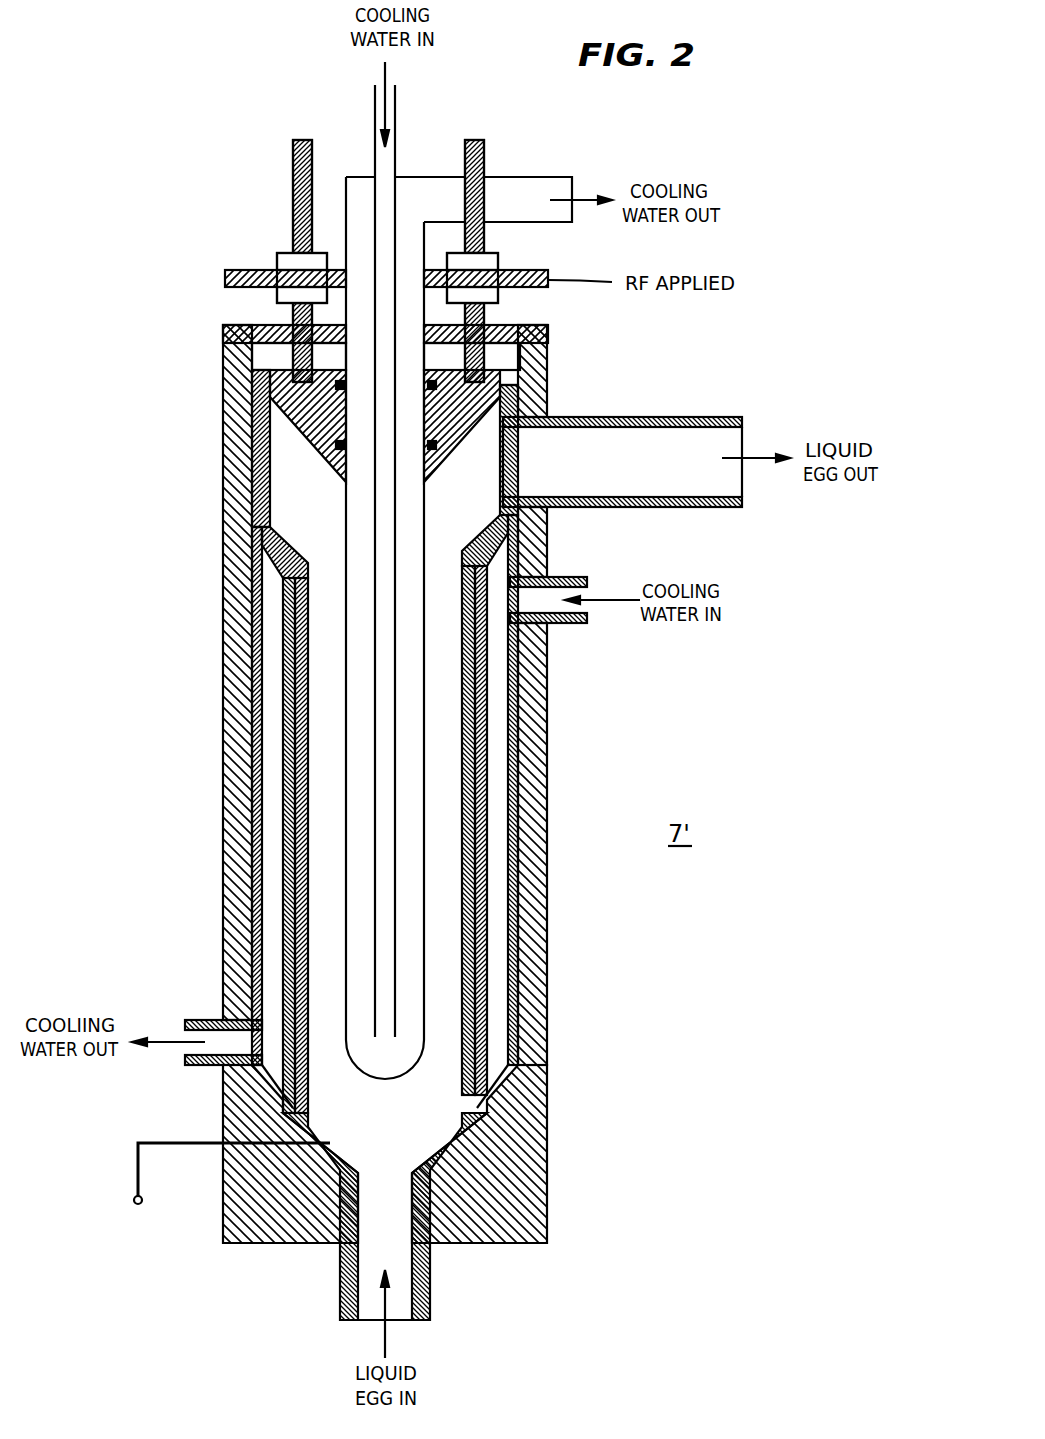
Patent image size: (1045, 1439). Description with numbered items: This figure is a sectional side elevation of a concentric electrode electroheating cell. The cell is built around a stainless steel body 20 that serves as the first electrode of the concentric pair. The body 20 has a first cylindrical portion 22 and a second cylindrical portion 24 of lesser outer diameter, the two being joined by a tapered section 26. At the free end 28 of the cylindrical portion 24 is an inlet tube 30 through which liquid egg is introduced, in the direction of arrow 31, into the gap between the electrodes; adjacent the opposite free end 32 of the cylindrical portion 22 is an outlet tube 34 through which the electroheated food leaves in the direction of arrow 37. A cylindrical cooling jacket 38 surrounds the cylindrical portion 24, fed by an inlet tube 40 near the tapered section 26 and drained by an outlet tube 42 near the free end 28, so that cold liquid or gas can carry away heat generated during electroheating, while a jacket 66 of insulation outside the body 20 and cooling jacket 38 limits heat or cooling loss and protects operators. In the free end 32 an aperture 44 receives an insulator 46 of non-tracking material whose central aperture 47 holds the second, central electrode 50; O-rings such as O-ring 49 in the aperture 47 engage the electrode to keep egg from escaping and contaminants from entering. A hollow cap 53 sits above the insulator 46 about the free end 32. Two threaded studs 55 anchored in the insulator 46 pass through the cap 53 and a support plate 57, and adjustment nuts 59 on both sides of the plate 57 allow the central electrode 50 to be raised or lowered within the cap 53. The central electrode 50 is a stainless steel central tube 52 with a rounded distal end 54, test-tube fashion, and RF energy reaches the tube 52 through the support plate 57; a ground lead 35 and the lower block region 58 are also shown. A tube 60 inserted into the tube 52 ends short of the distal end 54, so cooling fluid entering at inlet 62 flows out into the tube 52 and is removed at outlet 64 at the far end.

The body 20 is at (248, 487).
The first cylindrical portion 22 is at (270, 540).
The second cylindrical portion 24 is at (300, 563).
The tapered section 26 is at (262, 528).
The free end 28 is at (455, 1183).
The inlet tube 30 is at (420, 1283).
The arrow 31 is at (383, 1340).
The free end 32 is at (505, 390).
The outlet tube 34 is at (680, 417).
The ground electrode lead 35 is at (138, 1172).
The arrow 37 is at (770, 457).
The cylindrical cooling jacket 38 is at (262, 632).
The inlet tube 40 is at (565, 577).
The outlet tube 42 is at (200, 1020).
The aperture 44 is at (495, 360).
The insulator 46 is at (330, 360).
The central aperture 47 is at (330, 410).
The O-ring 49 is at (328, 446).
The central electrode 50 is at (350, 805).
The central tube 52 is at (424, 942).
The hollow cap 53 is at (228, 330).
The rounded distal end 54 is at (387, 1078).
The threaded studs 55 is at (484, 152).
The support plate 57 is at (250, 268).
The lower housing block 58 is at (300, 1130).
The adjustment nuts 59 is at (318, 262).
The tube 60 is at (388, 818).
The inlet 62 is at (398, 108).
The outlet 64 is at (560, 177).
The jacket 66 is at (548, 992).